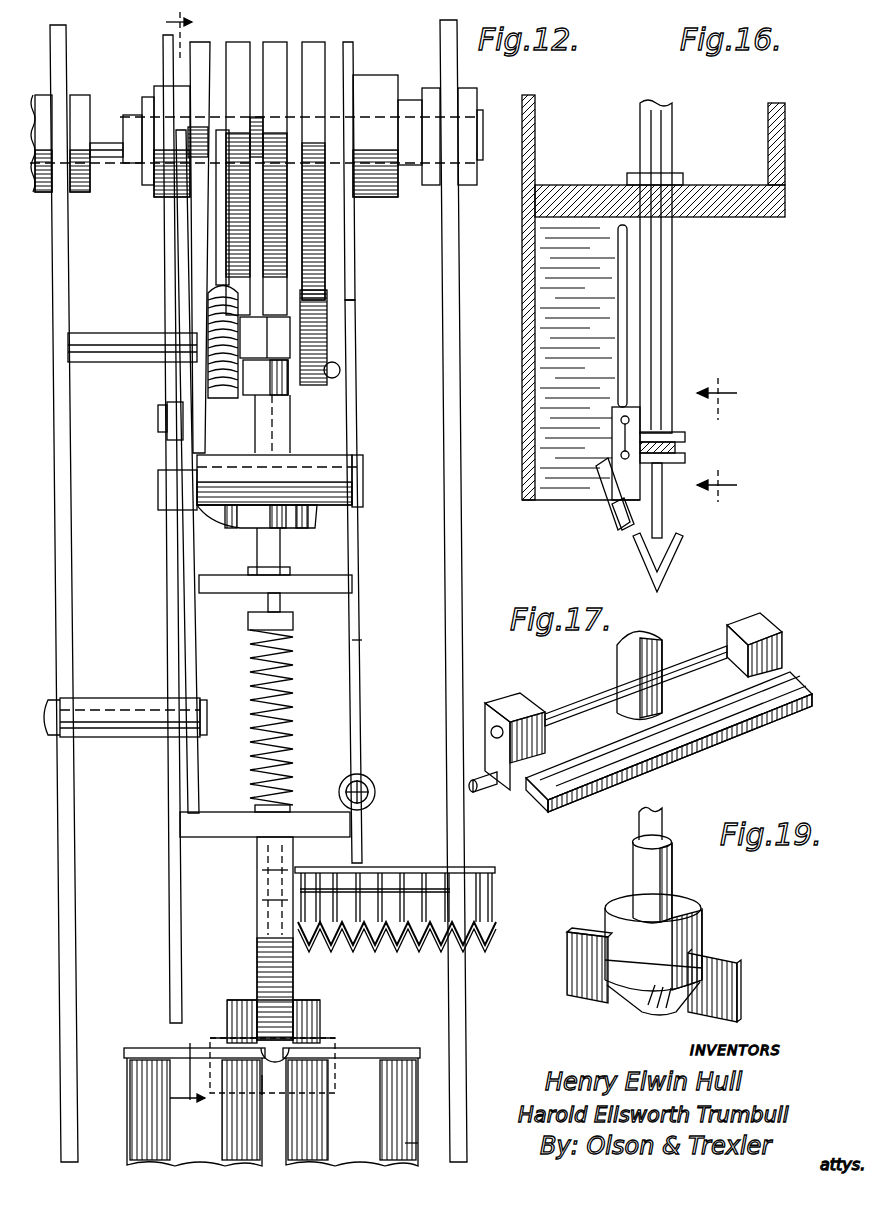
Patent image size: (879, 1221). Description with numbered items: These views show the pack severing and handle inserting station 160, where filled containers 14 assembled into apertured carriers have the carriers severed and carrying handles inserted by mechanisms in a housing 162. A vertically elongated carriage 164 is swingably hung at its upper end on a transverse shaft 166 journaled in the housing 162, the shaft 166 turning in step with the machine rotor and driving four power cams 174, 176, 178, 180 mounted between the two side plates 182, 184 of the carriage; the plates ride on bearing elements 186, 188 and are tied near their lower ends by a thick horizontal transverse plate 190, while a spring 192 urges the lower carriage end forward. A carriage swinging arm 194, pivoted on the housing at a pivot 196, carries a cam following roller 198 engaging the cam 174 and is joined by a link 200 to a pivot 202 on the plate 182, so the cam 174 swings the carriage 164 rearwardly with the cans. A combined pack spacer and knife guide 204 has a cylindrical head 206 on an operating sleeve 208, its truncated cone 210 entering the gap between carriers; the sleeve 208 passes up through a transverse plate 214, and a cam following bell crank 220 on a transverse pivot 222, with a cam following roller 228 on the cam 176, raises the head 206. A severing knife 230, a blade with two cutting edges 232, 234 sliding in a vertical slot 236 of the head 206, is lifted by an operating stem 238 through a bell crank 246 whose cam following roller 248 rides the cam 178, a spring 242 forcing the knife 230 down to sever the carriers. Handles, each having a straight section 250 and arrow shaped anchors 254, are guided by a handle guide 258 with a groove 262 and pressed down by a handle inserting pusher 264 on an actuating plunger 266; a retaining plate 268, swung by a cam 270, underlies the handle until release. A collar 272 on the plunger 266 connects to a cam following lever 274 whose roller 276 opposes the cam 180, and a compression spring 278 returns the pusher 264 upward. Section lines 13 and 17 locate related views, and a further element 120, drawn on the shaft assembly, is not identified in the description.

In FIG. 12, the section line 13— 13 is at (172, 568).
In FIG. 12, the containers 14 is at (405, 1143).
In FIG. 16, the section line 17— 17 is at (731, 440).
In FIG. 12, the gear 120 is at (222, 223).
In FIG. 12, the pack severing and handle inserting station 160 is at (168, 1040).
In FIG. 12, the housing 162 is at (72, 580).
In FIG. 12, the carriage 164 is at (362, 628).
In FIG. 12, the transverse shaft 166 is at (413, 120).
In FIG. 12, the power cam 174 is at (200, 48).
In FIG. 12, the power cam 176 is at (240, 48).
In FIG. 12, the power cam 178 is at (278, 48).
In FIG. 12, the power cam 180 is at (316, 50).
In FIG. 12, the side plate 182 is at (173, 763).
In FIG. 12, the side plate 184 is at (360, 695).
In FIG. 12, the bearing element 186 is at (157, 197).
In FIG. 12, the bearing element 188 is at (366, 192).
In FIG. 12, the transverse plate 190 is at (347, 827).
In FIG. 12, the spring 192 is at (373, 785).
In FIG. 12, the carriage swinging arm 194 is at (187, 627).
In FIG. 12, the pivot 196 is at (207, 707).
In FIG. 12, the cam following roller 198 is at (203, 128).
In FIG. 12, the link 200 is at (180, 432).
In FIG. 12, the pivot 202 is at (163, 418).
In FIG. 12, the pack spacer and severing knife guide 204 is at (323, 1033).
In FIG. 19, the pack spacer and severing knife guide 204 is at (707, 935).
In FIG. 19, the cylindrical head 206 is at (616, 930).
In FIG. 19, the operating sleeve 208 is at (637, 855).
In FIG. 19, the truncated cone 210 is at (640, 1000).
In FIG. 12, the transverse plate 214 is at (337, 582).
In FIG. 12, the cam following bell crank 220 is at (173, 447).
In FIG. 12, the transverse pivot 222 is at (365, 478).
In FIG. 12, the cam following roller 228 is at (238, 155).
In FIG. 12, the severing knife 230 is at (337, 1078).
In FIG. 19, the severing knife 230 is at (718, 992).
In FIG. 19, the cutting edge 232 is at (585, 1005).
In FIG. 19, the cutting edge 234 is at (698, 1024).
In FIG. 19, the vertical slot 236 is at (690, 975).
In FIG. 19, the operating stem 238 is at (660, 820).
In FIG. 12, the spring 242 is at (213, 388).
In FIG. 12, the bell crank 246 is at (298, 255).
In FIG. 12, the cam following roller 248 is at (273, 130).
In FIG. 16, the straight section 250 is at (685, 447).
In FIG. 16, the arrow shaped anchors 254 is at (668, 572).
In FIG. 12, the handle guide 258 is at (293, 977).
In FIG. 12, the groove 262 is at (267, 927).
In FIG. 16, the handle inserting pusher 264 is at (680, 432).
In FIG. 17, the handle inserting pusher 264 is at (692, 683).
In FIG. 16, the actuating plunger 266 is at (672, 265).
In FIG. 16, the retaining plate 268 is at (683, 472).
In FIG. 17, the retaining plate 268 is at (541, 806).
In FIG. 16, the cam 270 is at (626, 292).
In FIG. 12, the collar 272 is at (290, 398).
In FIG. 12, the cam following lever 274 is at (283, 342).
In FIG. 12, the roller 276 is at (335, 367).
In FIG. 12, the compression spring 278 is at (293, 698).